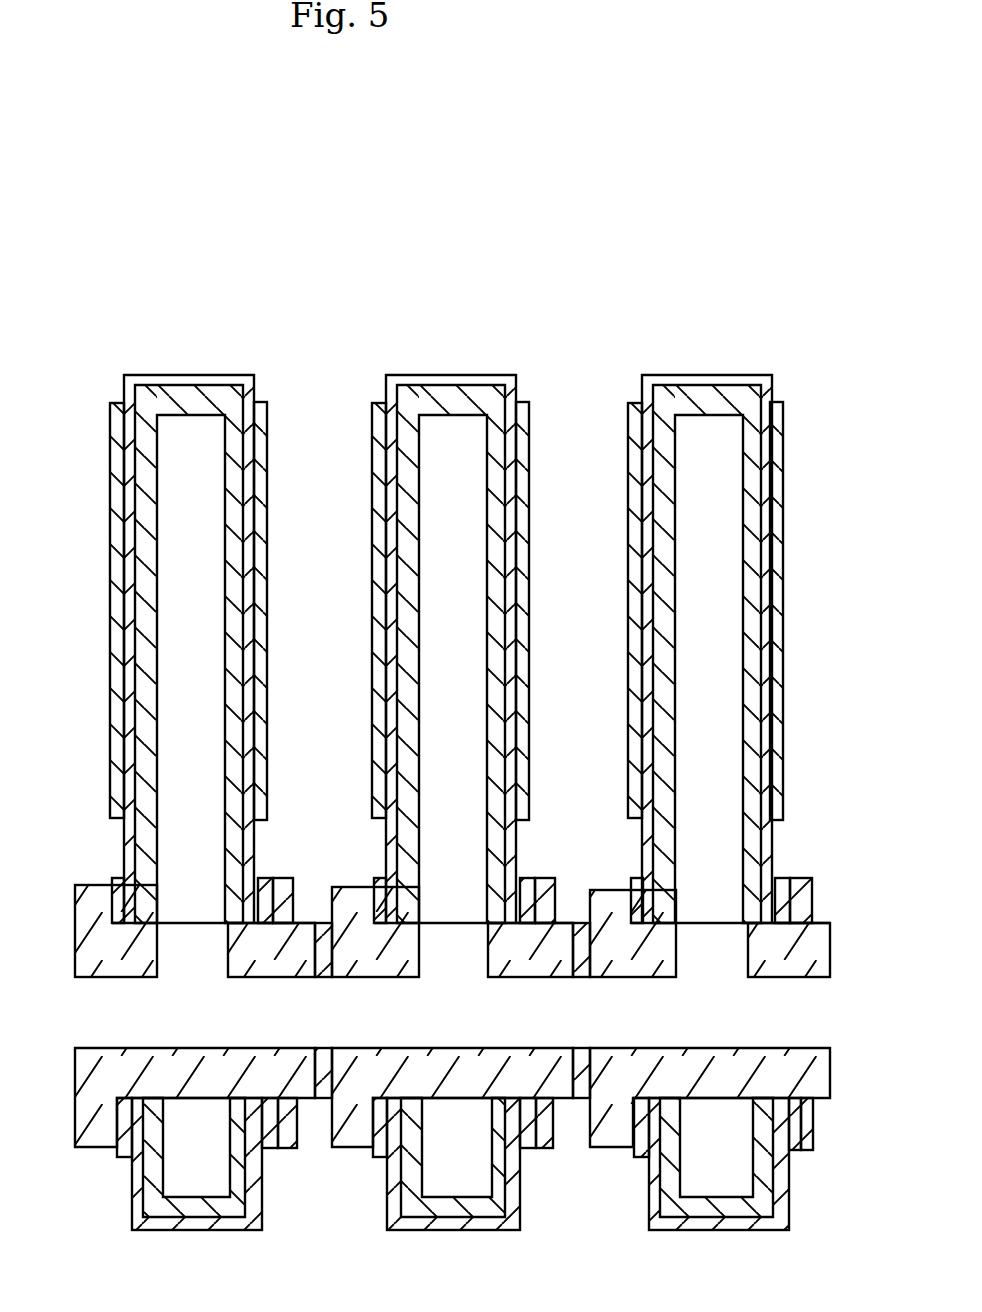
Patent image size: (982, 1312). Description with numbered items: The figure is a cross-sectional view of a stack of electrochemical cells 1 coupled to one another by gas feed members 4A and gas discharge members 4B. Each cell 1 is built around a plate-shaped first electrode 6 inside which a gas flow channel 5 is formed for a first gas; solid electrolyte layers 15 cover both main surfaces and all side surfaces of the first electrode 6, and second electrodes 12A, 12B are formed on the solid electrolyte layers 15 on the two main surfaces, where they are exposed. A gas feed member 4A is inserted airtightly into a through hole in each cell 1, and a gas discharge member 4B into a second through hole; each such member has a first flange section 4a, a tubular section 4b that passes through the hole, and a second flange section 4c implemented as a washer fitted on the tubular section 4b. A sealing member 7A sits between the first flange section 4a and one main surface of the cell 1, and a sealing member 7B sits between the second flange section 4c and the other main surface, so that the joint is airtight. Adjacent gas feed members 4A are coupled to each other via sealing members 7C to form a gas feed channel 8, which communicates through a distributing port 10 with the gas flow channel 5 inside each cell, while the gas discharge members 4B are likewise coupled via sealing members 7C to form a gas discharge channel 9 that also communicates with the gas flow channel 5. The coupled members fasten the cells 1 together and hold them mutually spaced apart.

The electrochemical cell 1 is at (440, 615).
The gas flow channel 5 is at (717, 566).
The first electrode 6 is at (178, 396).
The solid electrolyte layer 15 is at (124, 378).
The second electrode 12A is at (108, 443).
The second electrode 12B is at (266, 418).
The gas feed member 4A is at (340, 874).
The gas discharge member 4B is at (98, 884).
The first flange section 4a is at (618, 888).
The tubular section 4b is at (662, 1056).
The second flange section 4c is at (272, 880).
The sealing member 7A is at (123, 1152).
The sealing member 7B is at (268, 1150).
The sealing member 7C is at (582, 925).
The gas feed channel 8 is at (433, 907).
The gas discharge channel 9 is at (120, 980).
The distributing port 10 is at (717, 980).